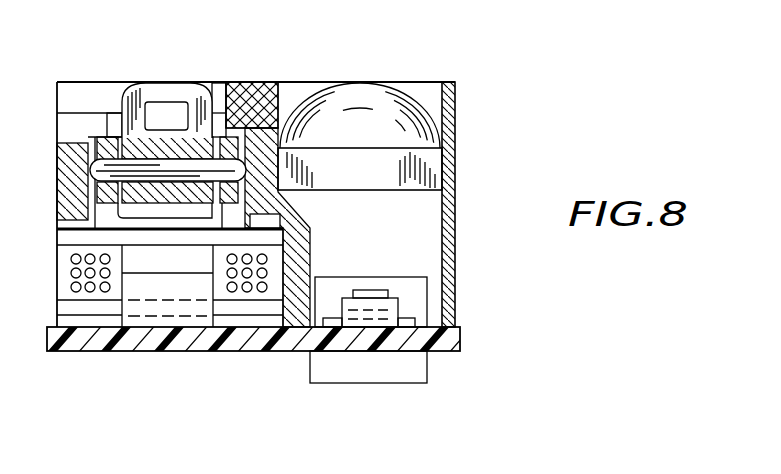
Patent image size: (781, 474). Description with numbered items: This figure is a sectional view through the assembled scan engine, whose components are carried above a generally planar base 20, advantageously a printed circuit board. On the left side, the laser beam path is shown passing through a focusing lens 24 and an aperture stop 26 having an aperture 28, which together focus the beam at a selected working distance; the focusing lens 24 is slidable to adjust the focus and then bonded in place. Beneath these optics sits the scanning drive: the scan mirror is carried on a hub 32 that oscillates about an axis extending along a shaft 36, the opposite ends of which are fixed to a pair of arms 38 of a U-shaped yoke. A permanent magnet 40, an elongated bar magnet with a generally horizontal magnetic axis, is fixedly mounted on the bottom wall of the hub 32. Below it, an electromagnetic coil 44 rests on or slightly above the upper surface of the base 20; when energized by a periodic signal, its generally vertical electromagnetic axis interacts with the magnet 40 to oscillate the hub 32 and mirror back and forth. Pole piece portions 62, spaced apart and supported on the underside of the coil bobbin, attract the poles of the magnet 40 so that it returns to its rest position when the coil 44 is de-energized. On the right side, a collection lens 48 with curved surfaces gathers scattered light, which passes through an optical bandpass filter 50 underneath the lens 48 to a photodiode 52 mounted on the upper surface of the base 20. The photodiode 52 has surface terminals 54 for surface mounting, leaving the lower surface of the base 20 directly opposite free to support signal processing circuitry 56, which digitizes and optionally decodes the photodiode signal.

The base 20 is at (461, 344).
The focusing lens 24 is at (125, 92).
The aperture stop 26 is at (179, 91).
The aperture 28 is at (186, 104).
The hub 32 is at (95, 184).
The shaft 36 is at (234, 122).
The arms 38 is at (84, 125).
The permanent magnet 40 is at (108, 200).
The electromagnetic coil 44 is at (80, 296).
The collection lens 48 is at (384, 100).
The optical bandpass filter 50 is at (431, 165).
The photodiode 52 is at (400, 303).
The surface terminals 54 is at (413, 320).
The signal processing circuitry 56 is at (415, 373).
The pole piece portions 62 is at (150, 306).